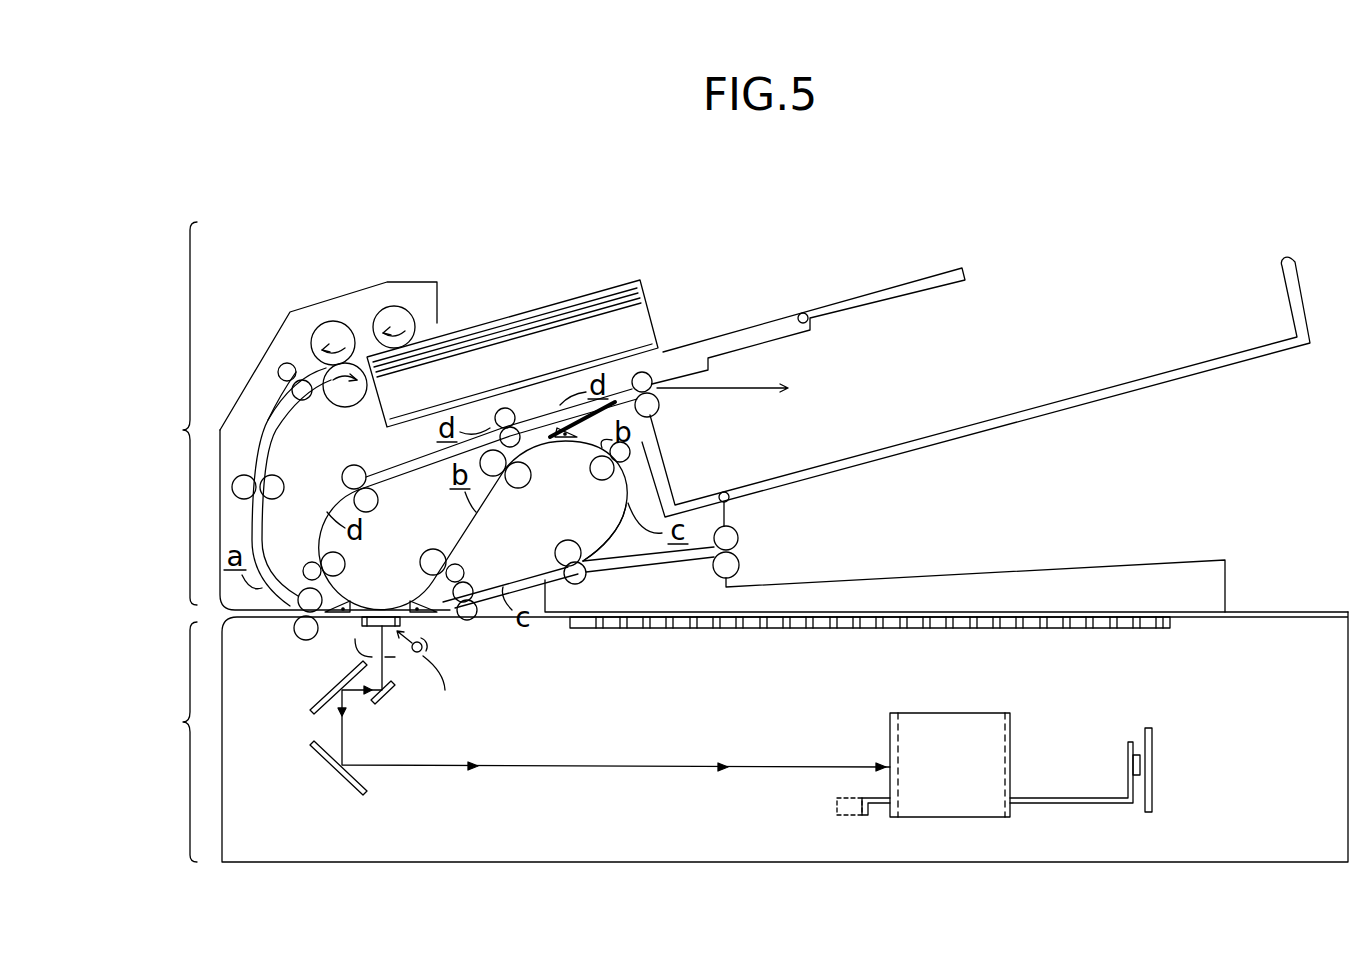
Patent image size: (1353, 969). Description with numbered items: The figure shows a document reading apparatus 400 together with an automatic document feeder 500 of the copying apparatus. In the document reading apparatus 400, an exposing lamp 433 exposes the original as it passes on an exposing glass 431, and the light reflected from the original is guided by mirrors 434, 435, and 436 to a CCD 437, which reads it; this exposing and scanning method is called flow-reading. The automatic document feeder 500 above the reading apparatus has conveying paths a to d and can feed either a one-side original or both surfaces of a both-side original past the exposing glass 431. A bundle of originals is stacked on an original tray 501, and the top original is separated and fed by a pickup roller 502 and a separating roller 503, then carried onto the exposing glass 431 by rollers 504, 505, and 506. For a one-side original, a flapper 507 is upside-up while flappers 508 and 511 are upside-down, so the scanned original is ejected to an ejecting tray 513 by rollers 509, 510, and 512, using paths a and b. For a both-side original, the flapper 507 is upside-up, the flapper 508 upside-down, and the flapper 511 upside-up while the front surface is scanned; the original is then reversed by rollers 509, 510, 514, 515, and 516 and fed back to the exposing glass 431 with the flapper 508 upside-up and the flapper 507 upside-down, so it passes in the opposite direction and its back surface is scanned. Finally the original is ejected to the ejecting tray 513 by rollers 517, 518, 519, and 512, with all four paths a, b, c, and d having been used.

The automatic document feeder 500 is at (281, 416).
The document reading apparatus 400 is at (730, 737).
The original tray 501 is at (735, 332).
The pickup roller 502 is at (397, 308).
The separating roller 503 is at (352, 365).
The roller 504 is at (306, 398).
The roller 505 is at (285, 487).
The roller 506 is at (300, 592).
The flapper 507 is at (343, 603).
The flapper 508 is at (426, 651).
The roller 509 is at (438, 548).
The roller 510 is at (518, 489).
The flapper 511 is at (568, 443).
The roller 512 is at (660, 410).
The ejecting tray 513 is at (1000, 426).
The roller 514 is at (598, 483).
The roller 515 is at (555, 553).
The roller 516 is at (476, 616).
The roller 517 is at (346, 560).
The roller 518 is at (362, 467).
The roller 519 is at (507, 408).
The exposing glass 431 is at (347, 632).
The exposing lamp 433 is at (445, 690).
The mirror 434 is at (385, 705).
The mirror 435 is at (308, 708).
The mirror 436 is at (345, 786).
The CCD 437 is at (985, 713).